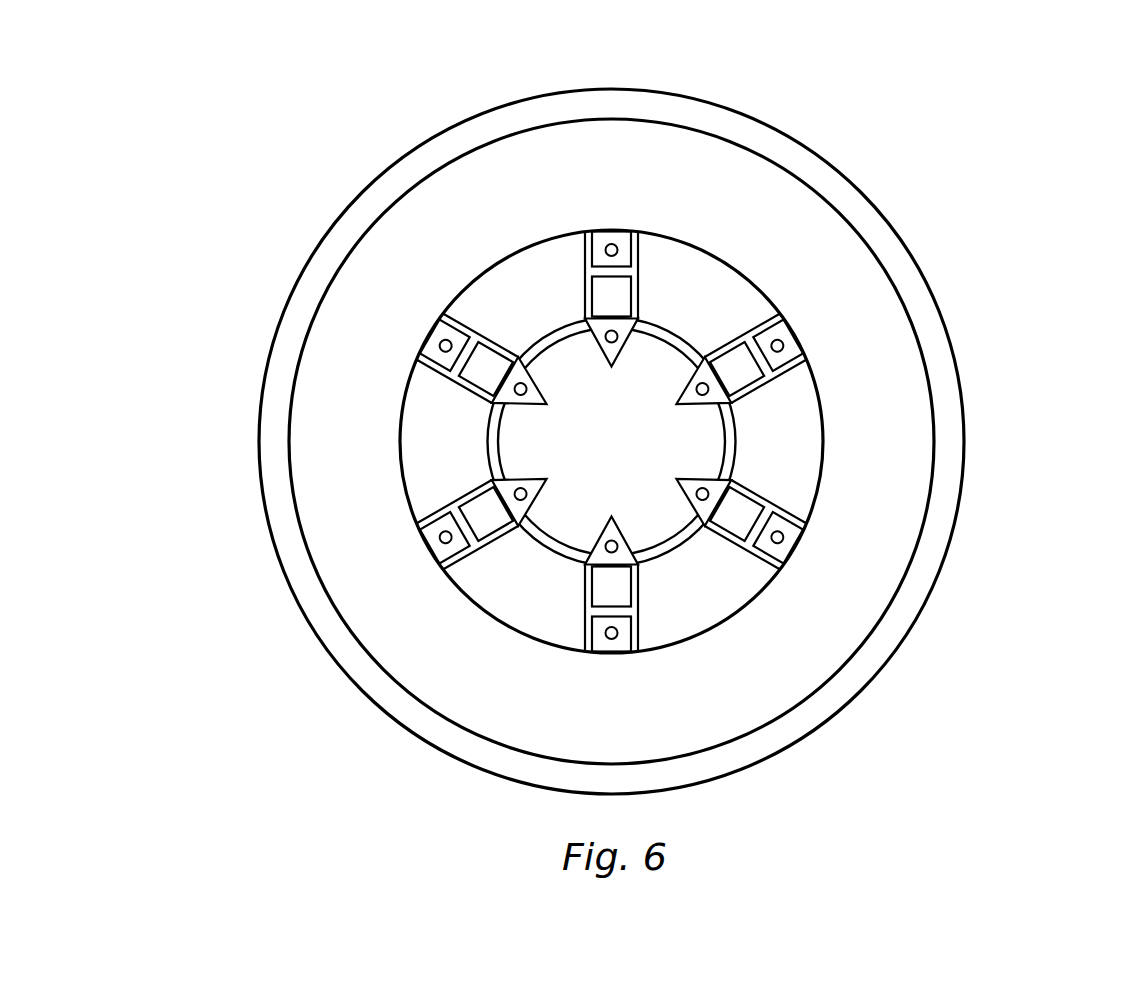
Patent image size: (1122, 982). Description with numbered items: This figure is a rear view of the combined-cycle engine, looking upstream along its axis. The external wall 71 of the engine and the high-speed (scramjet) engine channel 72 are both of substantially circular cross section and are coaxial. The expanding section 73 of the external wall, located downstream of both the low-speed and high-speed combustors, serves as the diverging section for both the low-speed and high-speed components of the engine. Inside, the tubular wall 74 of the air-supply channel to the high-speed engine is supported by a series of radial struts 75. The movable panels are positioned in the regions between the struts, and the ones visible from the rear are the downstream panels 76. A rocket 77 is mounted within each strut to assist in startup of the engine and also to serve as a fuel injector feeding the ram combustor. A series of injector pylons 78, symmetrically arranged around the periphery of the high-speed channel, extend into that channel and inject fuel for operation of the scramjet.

The external wall 71 is at (724, 106).
The high-speed (scramjet) engine channel 72 is at (705, 452).
The expanding section of the external wall 73 is at (873, 535).
The tubular wall of the air-supply channel 74 is at (678, 337).
The radial struts 75 is at (757, 492).
The downstream panels 76 is at (433, 413).
The rocket 77 is at (786, 341).
The injector pylons 78 is at (518, 492).